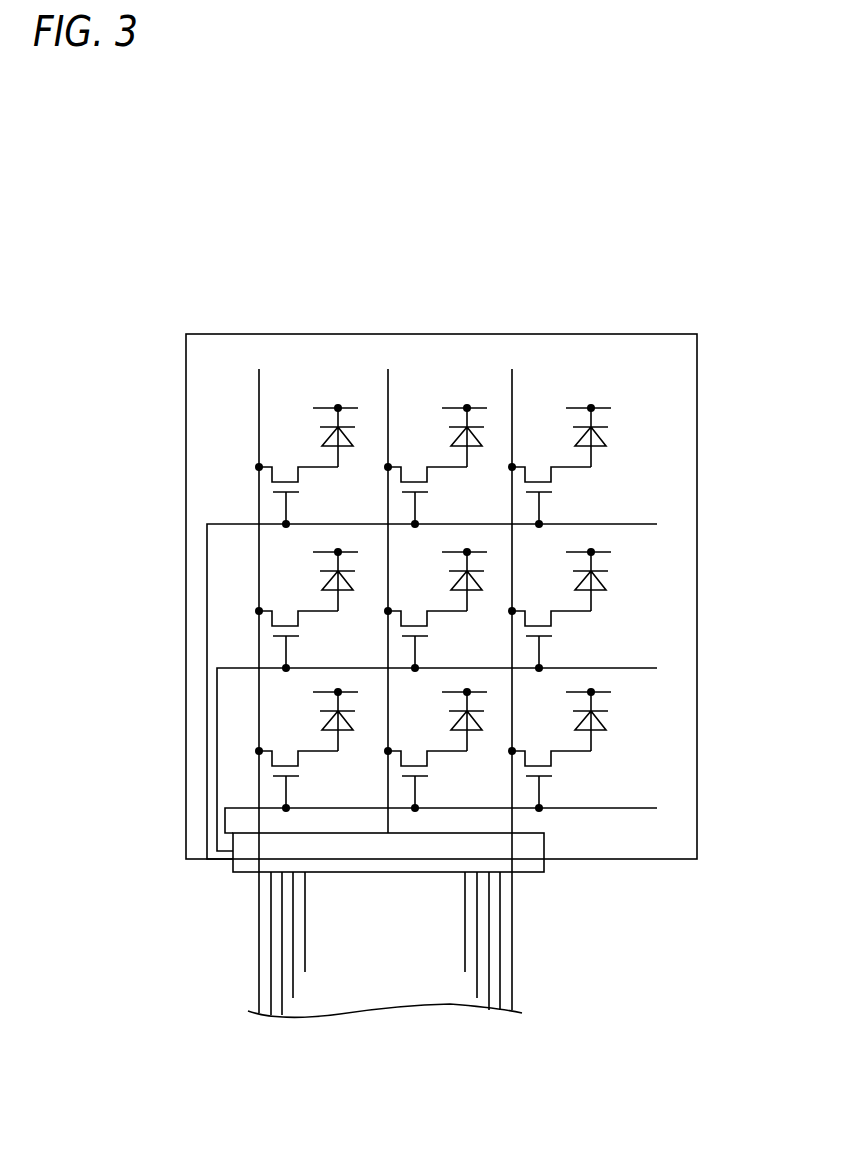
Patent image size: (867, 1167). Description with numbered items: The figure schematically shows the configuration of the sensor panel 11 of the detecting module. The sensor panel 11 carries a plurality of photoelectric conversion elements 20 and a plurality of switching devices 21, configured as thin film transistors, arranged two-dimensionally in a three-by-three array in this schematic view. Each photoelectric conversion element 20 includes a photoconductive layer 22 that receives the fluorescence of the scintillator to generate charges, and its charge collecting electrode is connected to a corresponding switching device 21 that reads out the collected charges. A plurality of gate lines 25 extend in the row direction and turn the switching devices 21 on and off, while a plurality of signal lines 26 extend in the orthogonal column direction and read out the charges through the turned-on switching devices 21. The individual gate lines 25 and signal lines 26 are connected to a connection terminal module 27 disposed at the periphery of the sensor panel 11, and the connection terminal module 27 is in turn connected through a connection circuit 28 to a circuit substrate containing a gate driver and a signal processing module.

The sensor panel 11 is at (637, 301).
The photoelectric conversion element 20 is at (462, 604).
The switching device 21 is at (423, 602).
The photoconductive layer 22 is at (697, 393).
The gate line 25 is at (441, 691).
The signal line 26 is at (413, 682).
The connection terminal module 27 is at (527, 867).
The connection circuit 28 is at (506, 960).